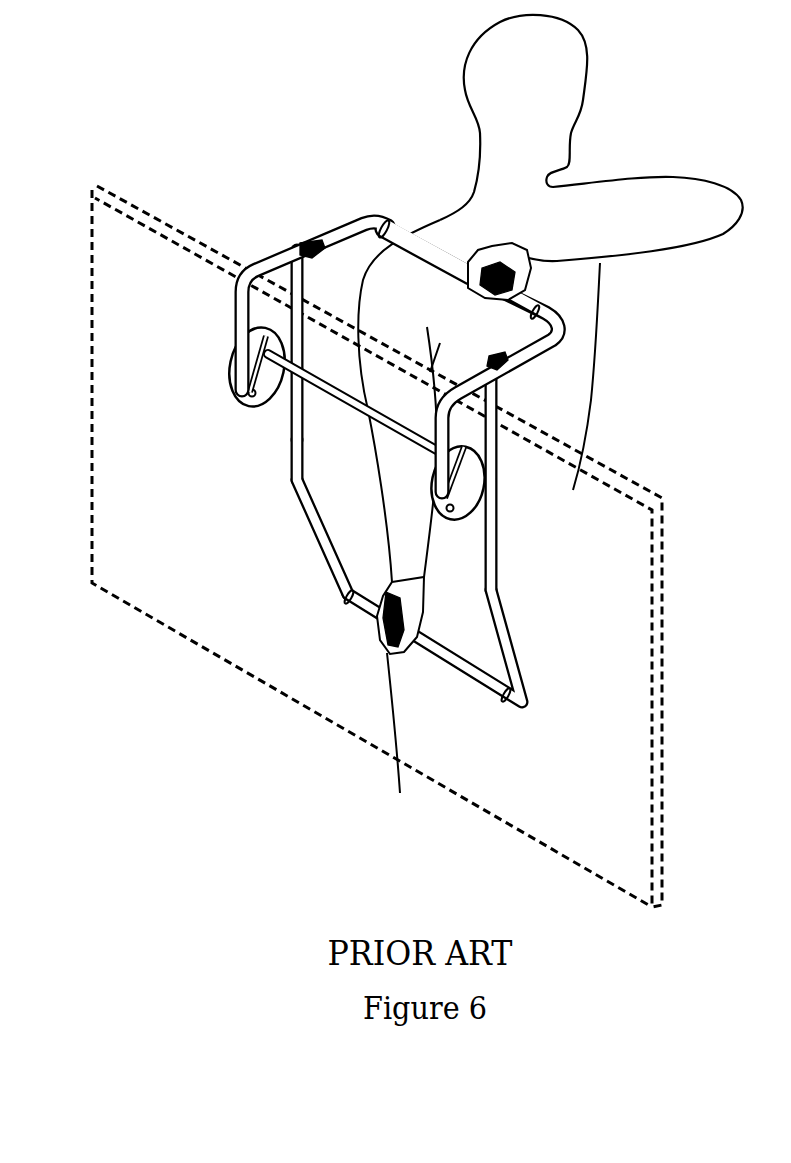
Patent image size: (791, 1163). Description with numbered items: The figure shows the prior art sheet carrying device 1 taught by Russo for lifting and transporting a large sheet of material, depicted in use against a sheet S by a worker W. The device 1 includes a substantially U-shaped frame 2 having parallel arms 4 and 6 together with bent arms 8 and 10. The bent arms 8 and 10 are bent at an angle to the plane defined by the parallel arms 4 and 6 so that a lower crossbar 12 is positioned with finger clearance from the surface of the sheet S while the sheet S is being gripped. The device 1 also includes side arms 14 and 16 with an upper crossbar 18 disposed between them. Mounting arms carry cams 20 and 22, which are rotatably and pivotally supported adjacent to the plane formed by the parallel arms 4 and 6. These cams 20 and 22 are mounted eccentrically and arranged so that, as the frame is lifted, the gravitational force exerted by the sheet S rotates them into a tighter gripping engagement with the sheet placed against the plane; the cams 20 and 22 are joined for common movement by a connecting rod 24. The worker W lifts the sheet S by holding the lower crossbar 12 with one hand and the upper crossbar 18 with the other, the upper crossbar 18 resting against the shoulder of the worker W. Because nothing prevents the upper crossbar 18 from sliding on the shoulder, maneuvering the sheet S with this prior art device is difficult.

The sheet S is at (185, 228).
The worker W is at (578, 43).
The prior art sheet carrying device 1 is at (299, 197).
The substantially U-shaped frame 2 is at (292, 487).
The parallel arm 4 is at (290, 427).
The parallel arm 6 is at (492, 570).
The bent arm 8 is at (313, 547).
The bent arm 10 is at (512, 648).
The crossbar 12 is at (348, 610).
The side arm 14 is at (357, 228).
The side arm 16 is at (563, 328).
The crossbar 18 is at (407, 235).
The cam 20 is at (230, 385).
The cam 22 is at (467, 498).
The connecting rod 24 is at (343, 410).